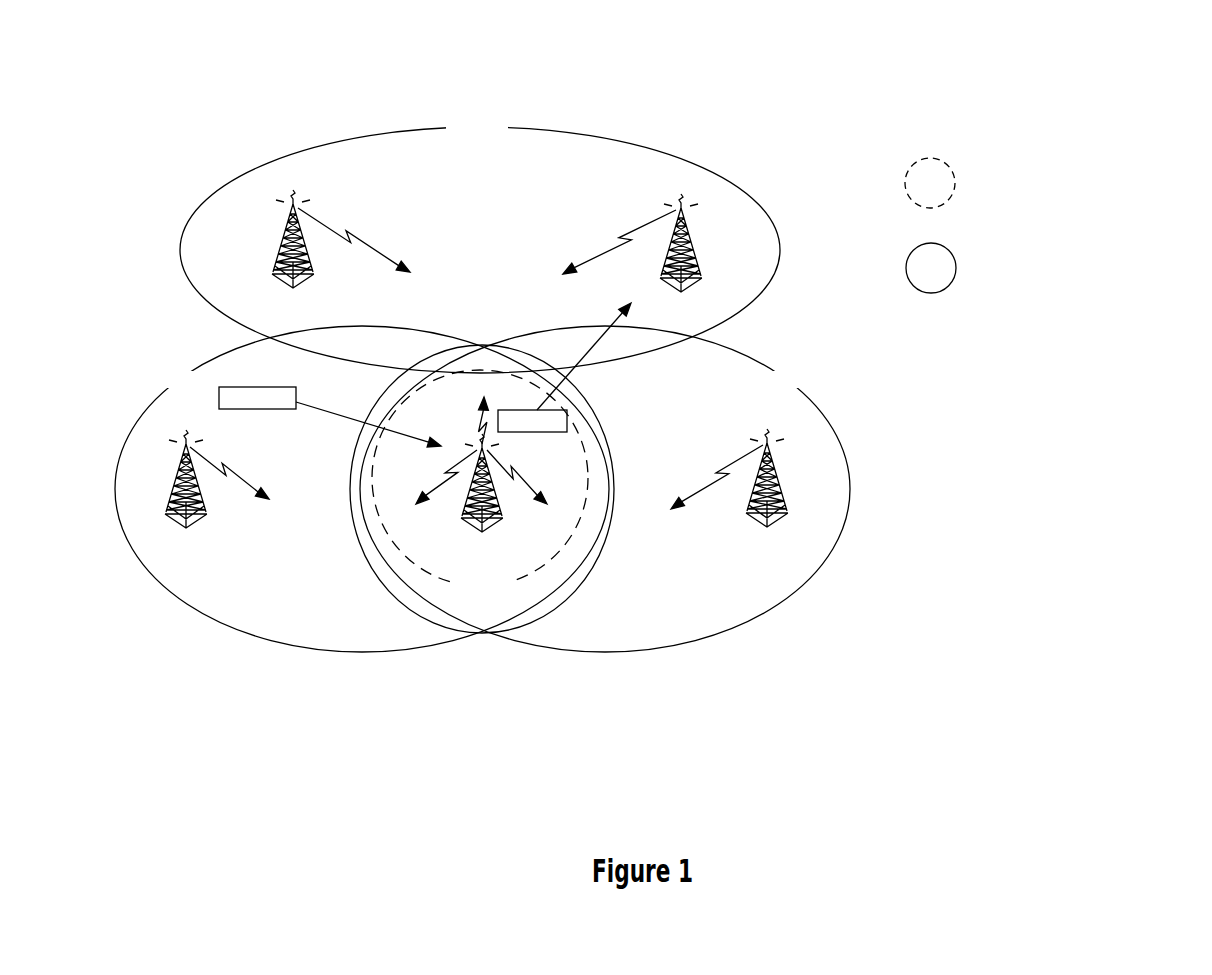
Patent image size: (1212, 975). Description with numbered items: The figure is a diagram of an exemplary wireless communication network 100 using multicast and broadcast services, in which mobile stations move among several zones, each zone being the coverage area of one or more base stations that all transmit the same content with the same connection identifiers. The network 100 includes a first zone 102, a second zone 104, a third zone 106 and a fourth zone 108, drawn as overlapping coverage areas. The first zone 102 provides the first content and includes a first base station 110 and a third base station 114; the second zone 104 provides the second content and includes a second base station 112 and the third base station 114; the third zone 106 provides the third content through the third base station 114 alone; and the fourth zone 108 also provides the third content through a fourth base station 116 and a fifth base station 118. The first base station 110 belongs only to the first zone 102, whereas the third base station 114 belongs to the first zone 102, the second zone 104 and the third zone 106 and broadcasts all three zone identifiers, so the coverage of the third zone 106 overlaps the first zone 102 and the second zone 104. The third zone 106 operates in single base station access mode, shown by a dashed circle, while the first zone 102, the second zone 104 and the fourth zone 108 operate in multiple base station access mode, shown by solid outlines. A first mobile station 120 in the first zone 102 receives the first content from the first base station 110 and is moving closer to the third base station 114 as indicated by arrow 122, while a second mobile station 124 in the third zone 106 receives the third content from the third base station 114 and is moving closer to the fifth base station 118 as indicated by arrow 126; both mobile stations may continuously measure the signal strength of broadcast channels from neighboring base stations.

The wireless communication network 100 is at (1111, 36).
The zone 1 102 is at (130, 380).
The zone 2 104 is at (833, 373).
The zone 3 106 is at (478, 600).
The zone 4 108 is at (490, 113).
The base station BS1 110 is at (168, 483).
The base station BS2 112 is at (780, 485).
The base station BS3 114 is at (506, 541).
The base station BS4 116 is at (278, 255).
The base station BS5 118 is at (692, 235).
The mobile station MS1 120 is at (265, 410).
The arrow 122 is at (359, 415).
The mobile station MS2 124 is at (525, 432).
The arrow 126 is at (580, 362).